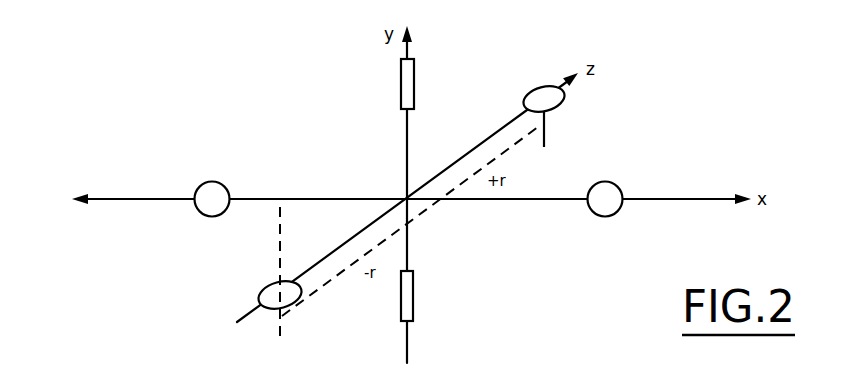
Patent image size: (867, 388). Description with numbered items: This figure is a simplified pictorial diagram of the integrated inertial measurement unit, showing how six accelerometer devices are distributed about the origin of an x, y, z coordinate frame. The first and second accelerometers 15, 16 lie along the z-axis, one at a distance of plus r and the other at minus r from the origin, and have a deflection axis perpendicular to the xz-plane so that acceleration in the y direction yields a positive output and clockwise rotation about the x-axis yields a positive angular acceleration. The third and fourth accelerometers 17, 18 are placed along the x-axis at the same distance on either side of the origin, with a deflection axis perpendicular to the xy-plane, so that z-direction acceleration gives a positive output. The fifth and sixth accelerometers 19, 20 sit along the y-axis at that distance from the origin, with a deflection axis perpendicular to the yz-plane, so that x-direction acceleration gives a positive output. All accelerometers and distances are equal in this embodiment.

The first accelerometer 15 is at (535, 86).
The second accelerometer 16 is at (267, 285).
The third accelerometer 17 is at (608, 181).
The fourth accelerometer 18 is at (225, 183).
The fifth accelerometer 19 is at (414, 88).
The sixth accelerometer 20 is at (413, 292).